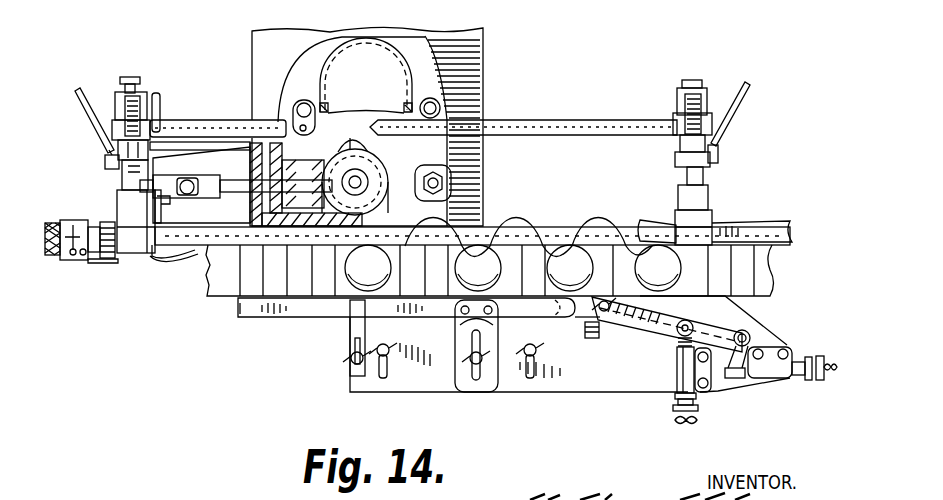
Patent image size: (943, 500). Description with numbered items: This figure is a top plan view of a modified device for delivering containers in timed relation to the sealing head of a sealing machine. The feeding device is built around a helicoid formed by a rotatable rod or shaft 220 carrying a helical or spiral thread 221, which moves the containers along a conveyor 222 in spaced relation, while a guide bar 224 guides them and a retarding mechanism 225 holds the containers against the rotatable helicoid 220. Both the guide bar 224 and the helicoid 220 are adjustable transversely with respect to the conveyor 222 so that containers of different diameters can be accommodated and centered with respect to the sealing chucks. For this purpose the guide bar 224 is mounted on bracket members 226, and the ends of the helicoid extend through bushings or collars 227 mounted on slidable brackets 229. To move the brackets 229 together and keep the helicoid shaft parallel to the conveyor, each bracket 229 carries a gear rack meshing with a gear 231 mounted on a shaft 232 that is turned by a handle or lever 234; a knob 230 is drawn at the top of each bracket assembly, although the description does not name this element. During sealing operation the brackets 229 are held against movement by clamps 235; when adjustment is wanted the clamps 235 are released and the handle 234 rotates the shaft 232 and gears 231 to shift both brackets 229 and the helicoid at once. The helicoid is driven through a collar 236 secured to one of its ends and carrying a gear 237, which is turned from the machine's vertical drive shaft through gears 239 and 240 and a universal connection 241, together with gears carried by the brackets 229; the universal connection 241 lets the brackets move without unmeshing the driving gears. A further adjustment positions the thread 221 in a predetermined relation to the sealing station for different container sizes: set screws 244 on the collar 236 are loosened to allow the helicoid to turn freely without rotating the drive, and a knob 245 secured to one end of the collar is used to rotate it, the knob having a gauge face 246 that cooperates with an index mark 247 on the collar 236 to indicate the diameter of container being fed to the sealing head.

The rotatable rod or shaft 220 is at (572, 229).
The helical or spiral thread 221 is at (510, 228).
The conveyor 222 is at (210, 290).
The guide bar 224 is at (318, 305).
The retarding mechanism 225 is at (650, 355).
The bracket members 226 is at (350, 358).
The bushings or collars 227 is at (128, 236).
The slidable brackets 229 is at (126, 180).
The knob 230 is at (121, 80).
The gear 231 is at (138, 98).
The shaft 232 is at (220, 114).
The handle or lever 234 is at (161, 106).
The clamps 235 is at (97, 118).
The collar 236 is at (94, 228).
The gear 237 is at (108, 262).
The gear 239 is at (352, 138).
The gear 240 is at (335, 183).
The universal connection 241 is at (188, 178).
The set screws 244 is at (86, 262).
The knob 245 is at (53, 258).
The gauge face 246 is at (77, 262).
The index mark 247 is at (72, 230).